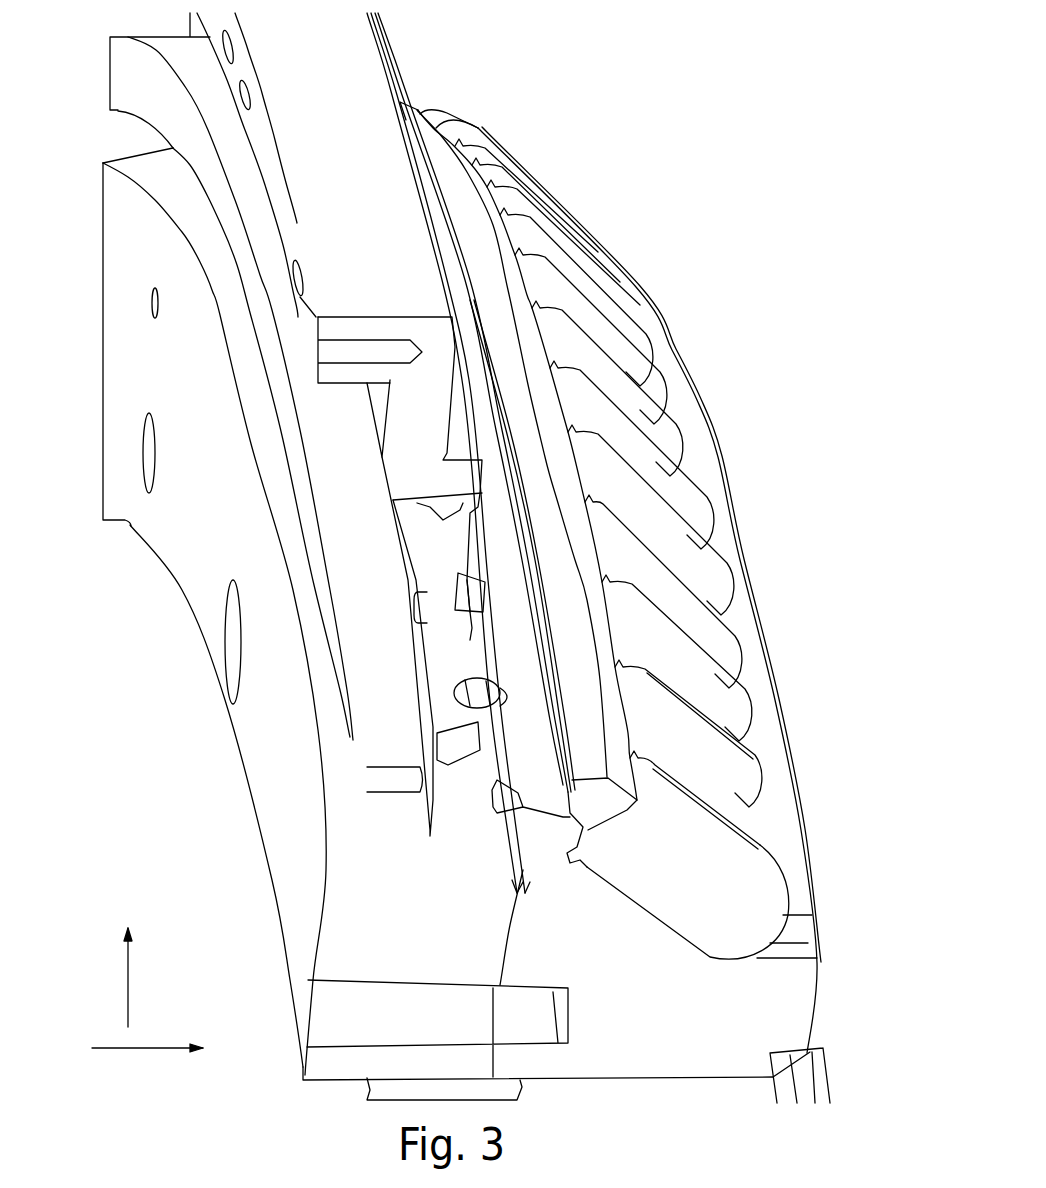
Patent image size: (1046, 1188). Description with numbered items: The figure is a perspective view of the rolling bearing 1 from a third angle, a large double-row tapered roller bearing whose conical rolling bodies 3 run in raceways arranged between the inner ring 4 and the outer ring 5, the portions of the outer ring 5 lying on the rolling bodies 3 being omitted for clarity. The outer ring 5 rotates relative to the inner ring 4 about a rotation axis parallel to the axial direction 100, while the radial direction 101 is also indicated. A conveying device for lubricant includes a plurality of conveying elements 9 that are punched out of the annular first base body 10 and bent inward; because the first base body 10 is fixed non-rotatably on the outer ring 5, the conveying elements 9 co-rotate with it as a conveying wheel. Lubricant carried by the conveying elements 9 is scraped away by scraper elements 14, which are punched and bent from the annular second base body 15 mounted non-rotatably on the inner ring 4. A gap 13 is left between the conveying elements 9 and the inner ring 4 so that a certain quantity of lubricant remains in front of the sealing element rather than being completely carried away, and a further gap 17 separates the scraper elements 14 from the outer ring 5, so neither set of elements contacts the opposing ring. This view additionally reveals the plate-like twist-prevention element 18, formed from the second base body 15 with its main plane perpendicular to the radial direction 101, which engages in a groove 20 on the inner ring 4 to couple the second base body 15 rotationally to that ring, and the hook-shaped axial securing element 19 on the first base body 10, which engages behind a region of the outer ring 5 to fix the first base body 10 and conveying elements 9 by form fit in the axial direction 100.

The rolling bearing 1 is at (605, 100).
The conical rolling bodies 3 is at (674, 443).
The inner ring 4 is at (358, 927).
The outer ring 5 is at (345, 70).
The conveying elements 9 is at (453, 750).
The first base body 10 is at (492, 805).
The gap 13 is at (452, 775).
The scraper elements 14 is at (488, 596).
The second base body 15 is at (478, 532).
The gap 17 is at (472, 628).
The twist-prevention element 18 is at (494, 698).
The axial securing element 19 is at (418, 607).
The groove 20 is at (484, 678).
The axial direction 100 is at (175, 1047).
The radial direction 101 is at (128, 1010).